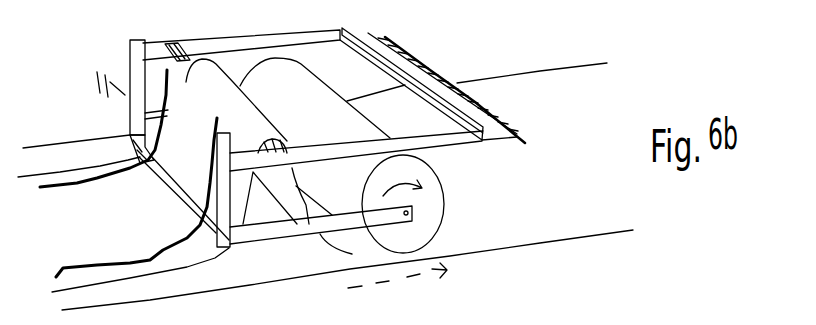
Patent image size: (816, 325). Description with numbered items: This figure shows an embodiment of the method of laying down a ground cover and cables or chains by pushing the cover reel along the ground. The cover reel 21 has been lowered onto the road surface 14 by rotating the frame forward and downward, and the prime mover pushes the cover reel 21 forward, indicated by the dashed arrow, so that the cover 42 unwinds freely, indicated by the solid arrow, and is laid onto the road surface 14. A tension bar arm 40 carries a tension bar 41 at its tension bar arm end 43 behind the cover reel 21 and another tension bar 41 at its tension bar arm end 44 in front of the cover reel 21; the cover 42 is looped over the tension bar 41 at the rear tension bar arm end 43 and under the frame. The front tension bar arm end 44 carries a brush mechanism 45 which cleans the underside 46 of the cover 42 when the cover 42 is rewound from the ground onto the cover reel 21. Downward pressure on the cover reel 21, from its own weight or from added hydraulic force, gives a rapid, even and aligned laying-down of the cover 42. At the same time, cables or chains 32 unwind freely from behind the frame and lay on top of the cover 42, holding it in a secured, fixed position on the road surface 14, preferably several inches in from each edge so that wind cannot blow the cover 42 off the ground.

The road surface 14 is at (598, 220).
The cover reel 21 is at (432, 210).
The cables or chains 32 is at (86, 190).
The tension bar arm 40 is at (438, 139).
The tension bar 41 is at (197, 58).
The cover 42 is at (340, 240).
The tension bar arm end 43 is at (175, 33).
The tension bar arm end 44 is at (333, 22).
The brush mechanism 45 is at (493, 107).
The underside of ground cover 46 is at (280, 180).